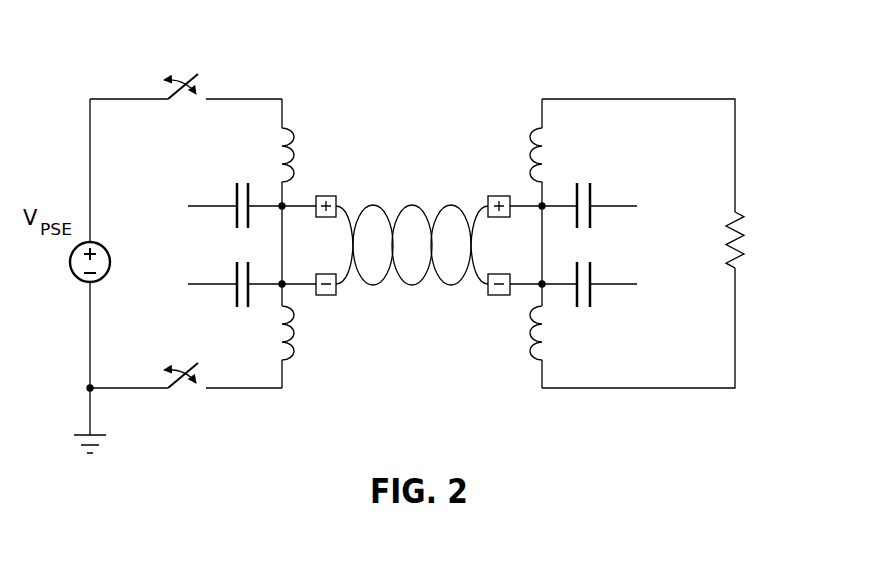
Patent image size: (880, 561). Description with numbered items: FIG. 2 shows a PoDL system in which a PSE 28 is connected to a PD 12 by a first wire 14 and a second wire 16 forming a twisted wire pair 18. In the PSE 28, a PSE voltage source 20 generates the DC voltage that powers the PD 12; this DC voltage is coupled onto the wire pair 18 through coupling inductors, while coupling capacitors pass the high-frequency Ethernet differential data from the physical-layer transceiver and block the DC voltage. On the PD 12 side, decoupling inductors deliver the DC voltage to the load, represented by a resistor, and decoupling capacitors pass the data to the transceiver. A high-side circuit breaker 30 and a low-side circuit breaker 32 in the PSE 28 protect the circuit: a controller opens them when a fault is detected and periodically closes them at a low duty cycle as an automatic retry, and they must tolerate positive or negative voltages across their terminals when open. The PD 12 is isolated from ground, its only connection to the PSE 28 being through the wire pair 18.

The PD 12 is at (551, 85).
The first wire 14 is at (339, 205).
The second wire 16 is at (340, 296).
The twisted wire pair 18 is at (433, 177).
The PSE voltage source 20 is at (110, 262).
The PSE 28 is at (359, 134).
The high-side circuit breaker 30 is at (183, 106).
The low-side circuit breaker 32 is at (179, 359).